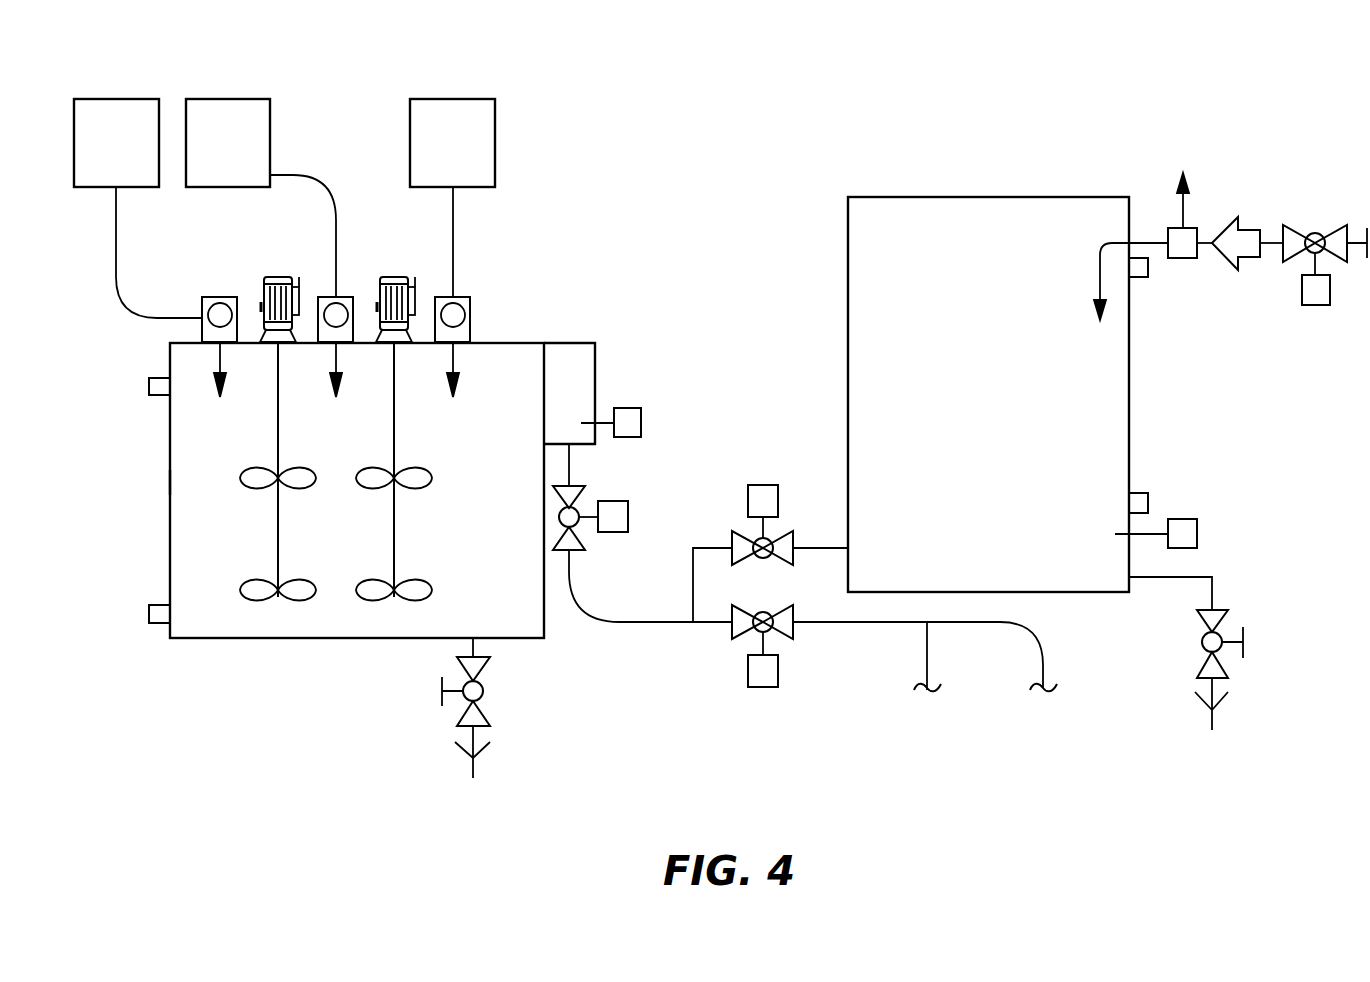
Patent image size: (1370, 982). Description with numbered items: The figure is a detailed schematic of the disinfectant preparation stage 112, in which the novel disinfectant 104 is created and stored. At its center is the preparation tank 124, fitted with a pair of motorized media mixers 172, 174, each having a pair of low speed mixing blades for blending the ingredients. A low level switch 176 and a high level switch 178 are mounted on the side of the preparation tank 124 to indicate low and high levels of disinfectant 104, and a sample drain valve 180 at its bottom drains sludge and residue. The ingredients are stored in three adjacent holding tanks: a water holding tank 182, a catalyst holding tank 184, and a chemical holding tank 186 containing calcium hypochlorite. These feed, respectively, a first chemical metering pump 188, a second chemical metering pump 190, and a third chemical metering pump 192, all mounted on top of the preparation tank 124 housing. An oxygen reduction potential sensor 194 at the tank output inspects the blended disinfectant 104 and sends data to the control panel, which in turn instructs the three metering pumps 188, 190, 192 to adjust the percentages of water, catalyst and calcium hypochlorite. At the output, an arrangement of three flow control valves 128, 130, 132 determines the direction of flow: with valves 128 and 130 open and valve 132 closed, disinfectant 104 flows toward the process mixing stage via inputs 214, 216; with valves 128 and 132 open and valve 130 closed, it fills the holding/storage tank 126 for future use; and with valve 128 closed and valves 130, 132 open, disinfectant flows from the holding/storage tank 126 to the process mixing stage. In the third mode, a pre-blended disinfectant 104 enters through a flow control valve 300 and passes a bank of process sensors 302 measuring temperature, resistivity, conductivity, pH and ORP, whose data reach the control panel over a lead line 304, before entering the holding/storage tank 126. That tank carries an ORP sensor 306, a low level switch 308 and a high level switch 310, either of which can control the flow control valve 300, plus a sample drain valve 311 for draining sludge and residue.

The disinfectant 104 is at (192, 520).
The disinfectant preparation stage 112 is at (604, 180).
The preparation tank 124 is at (168, 477).
The holding/storage tank 126 is at (847, 290).
The flow control valve 128 is at (586, 493).
The flow control valve 130 is at (738, 637).
The flow control valve 132 is at (785, 532).
The motorized media mixer 172 is at (283, 276).
The motorized media mixer 174 is at (398, 276).
The low level switch 176 is at (149, 615).
The high level switch 178 is at (149, 387).
The sample drain valve 180 is at (488, 710).
The water holding tank 182 is at (101, 99).
The catalyst holding tank 184 is at (212, 99).
The chemical holding tank 186 is at (453, 99).
The first chemical metering pump 188 is at (202, 303).
The second chemical metering pump 190 is at (345, 297).
The third chemical metering pump 192 is at (470, 307).
The oxygen reduction potential (ORP) sensor 194 is at (633, 408).
The input 214 is at (923, 657).
The input 216 is at (1043, 657).
The flow control valve 300 is at (1292, 228).
The bank of process sensors 302 is at (1183, 260).
The lead line 304 is at (1180, 205).
The oxygen reduction potential (ORP) sensor 306 is at (1197, 527).
The low level switch 308 is at (1150, 502).
The high level switch 310 is at (1140, 277).
The sample drain valve 311 is at (1230, 620).